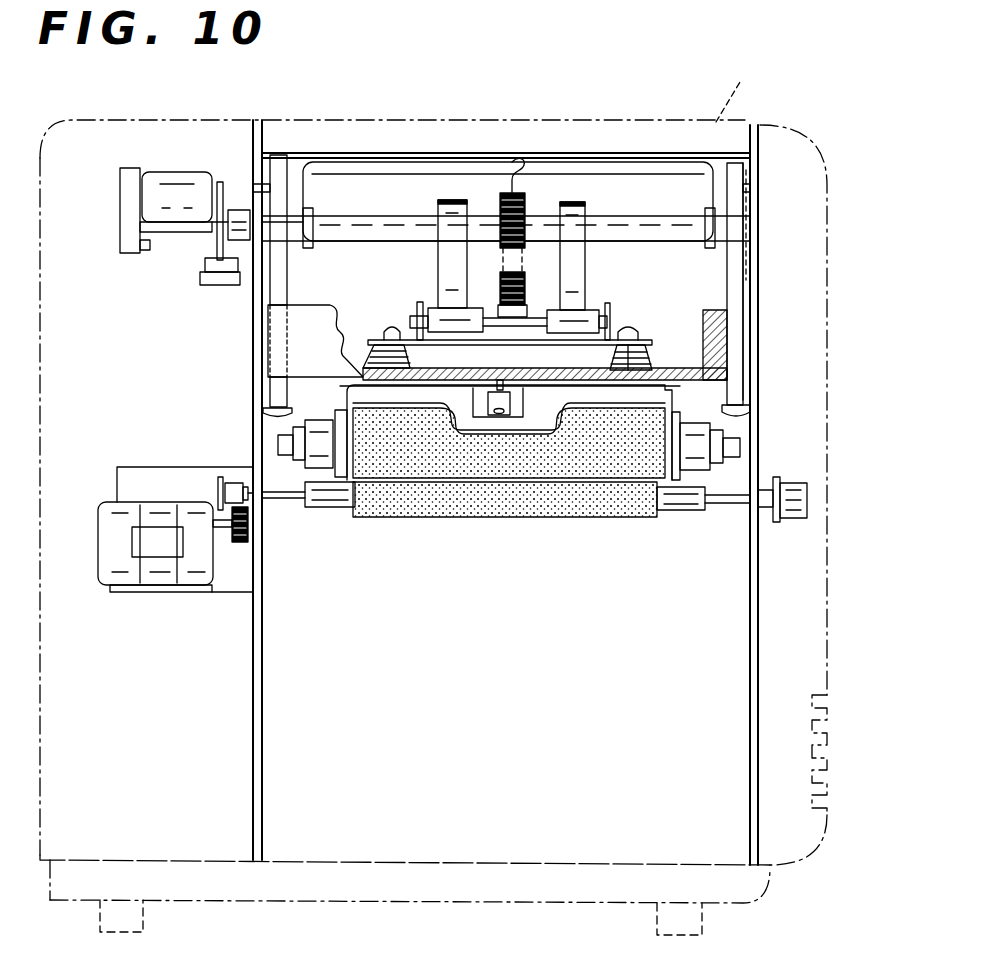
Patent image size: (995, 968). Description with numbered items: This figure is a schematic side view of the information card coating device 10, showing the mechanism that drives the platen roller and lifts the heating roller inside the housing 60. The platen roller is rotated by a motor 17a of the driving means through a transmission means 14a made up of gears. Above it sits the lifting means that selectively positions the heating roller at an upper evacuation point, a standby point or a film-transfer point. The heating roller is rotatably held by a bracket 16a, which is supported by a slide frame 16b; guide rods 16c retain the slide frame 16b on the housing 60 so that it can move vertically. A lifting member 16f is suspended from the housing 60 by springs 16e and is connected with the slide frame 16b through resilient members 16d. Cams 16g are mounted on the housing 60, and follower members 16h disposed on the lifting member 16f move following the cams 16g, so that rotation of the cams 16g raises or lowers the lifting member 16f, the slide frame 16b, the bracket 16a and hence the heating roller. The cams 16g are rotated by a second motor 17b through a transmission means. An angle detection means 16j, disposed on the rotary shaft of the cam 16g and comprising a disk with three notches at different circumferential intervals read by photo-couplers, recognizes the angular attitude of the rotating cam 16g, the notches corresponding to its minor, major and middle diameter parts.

The information card coating device 10 is at (793, 130).
The housing 60 is at (764, 86).
The transmission means 14a is at (243, 544).
The motor 17a is at (162, 578).
The motor 17b is at (177, 200).
The bracket 16a is at (672, 397).
The slide frame 16b is at (727, 375).
The guide rods 16c is at (278, 290).
The resilient members 16d is at (360, 346).
The springs 16e is at (515, 205).
The lifting member 16f is at (650, 340).
The cams 16g is at (453, 200).
The follower members 16h is at (598, 303).
The angle detection means 16j is at (230, 190).